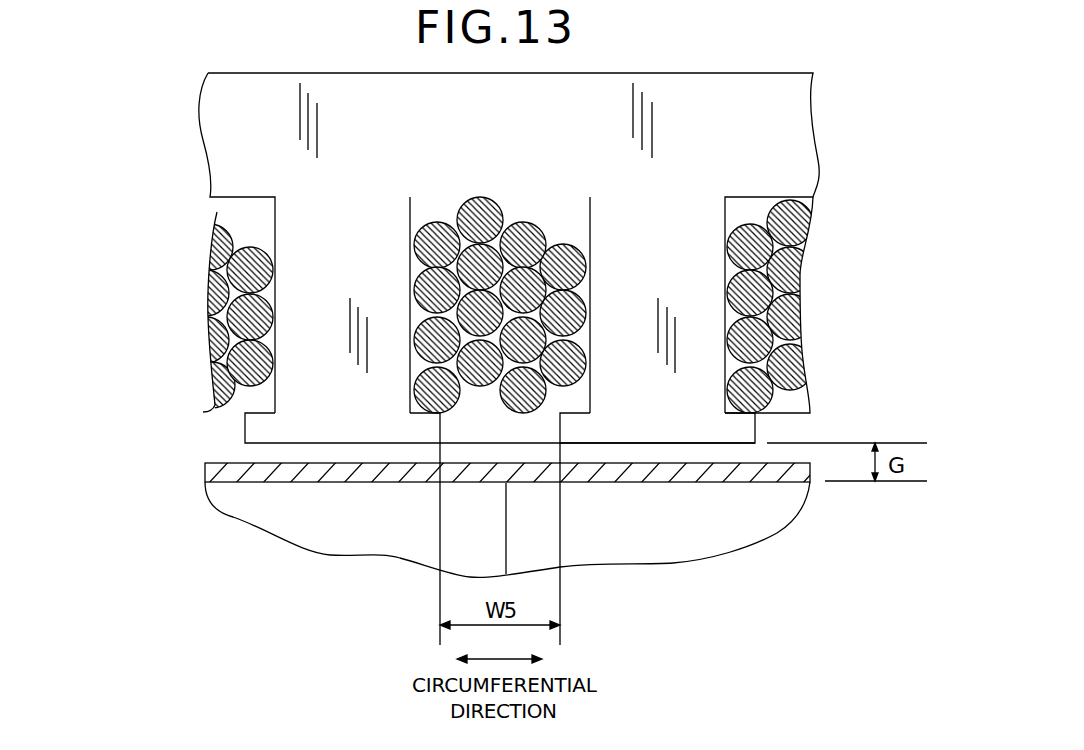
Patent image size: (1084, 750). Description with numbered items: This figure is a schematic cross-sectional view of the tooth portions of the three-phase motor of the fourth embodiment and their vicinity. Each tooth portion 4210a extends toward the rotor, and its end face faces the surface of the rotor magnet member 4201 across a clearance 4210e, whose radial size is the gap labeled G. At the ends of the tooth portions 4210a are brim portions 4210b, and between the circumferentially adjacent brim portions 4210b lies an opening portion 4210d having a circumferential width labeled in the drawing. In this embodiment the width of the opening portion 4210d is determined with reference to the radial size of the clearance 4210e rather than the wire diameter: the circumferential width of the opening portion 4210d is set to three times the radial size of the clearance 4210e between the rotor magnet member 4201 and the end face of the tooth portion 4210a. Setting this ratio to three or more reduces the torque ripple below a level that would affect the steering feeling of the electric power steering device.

The tooth portion 4210a is at (327, 248).
The brim portion 4210b is at (253, 430).
The opening portion 4210d is at (512, 442).
The clearance 4210e is at (692, 452).
The rotor magnet member 4201 is at (760, 520).